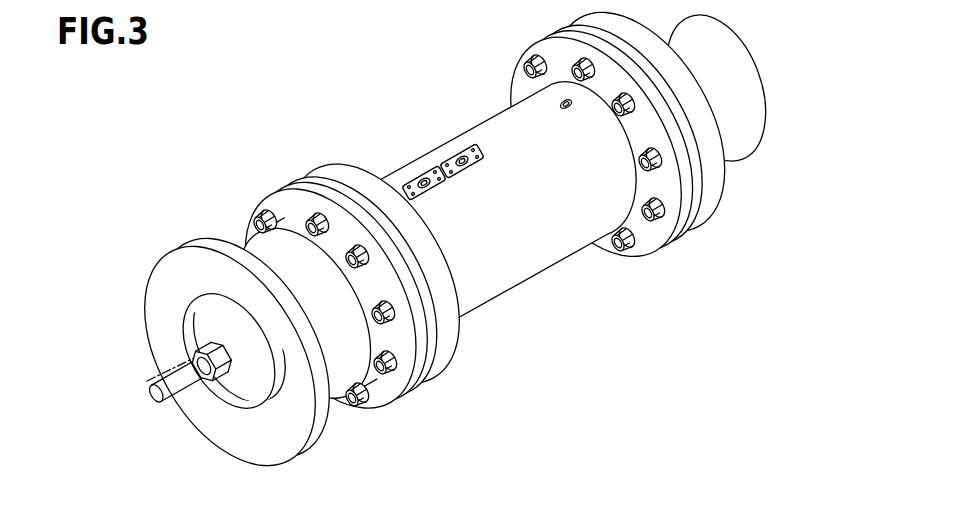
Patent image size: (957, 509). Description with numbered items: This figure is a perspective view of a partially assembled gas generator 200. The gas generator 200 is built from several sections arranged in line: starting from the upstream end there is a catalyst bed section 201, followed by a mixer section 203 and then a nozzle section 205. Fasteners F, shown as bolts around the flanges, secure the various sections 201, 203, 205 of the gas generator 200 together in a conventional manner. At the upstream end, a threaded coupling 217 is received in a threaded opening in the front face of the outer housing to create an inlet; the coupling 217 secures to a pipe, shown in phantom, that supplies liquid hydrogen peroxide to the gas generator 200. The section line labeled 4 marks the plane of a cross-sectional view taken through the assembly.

The gas generator 200 is at (276, 115).
The catalyst bed section 201 is at (352, 306).
The mixer section 203 is at (307, 145).
The nozzle section 205 is at (643, 143).
The coupling 217 is at (226, 297).
The fasteners F is at (263, 208).
The section line 4- 4 is at (60, 393).